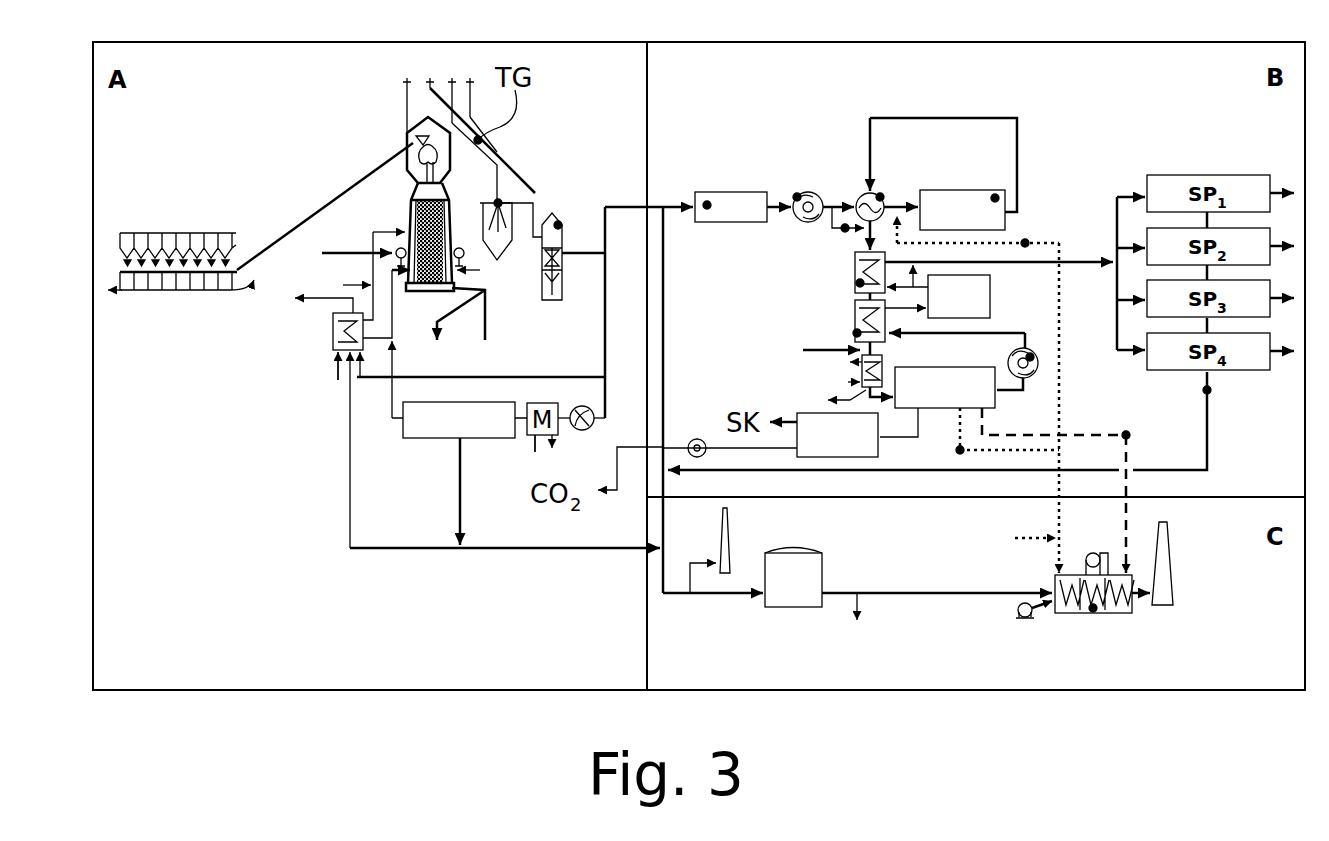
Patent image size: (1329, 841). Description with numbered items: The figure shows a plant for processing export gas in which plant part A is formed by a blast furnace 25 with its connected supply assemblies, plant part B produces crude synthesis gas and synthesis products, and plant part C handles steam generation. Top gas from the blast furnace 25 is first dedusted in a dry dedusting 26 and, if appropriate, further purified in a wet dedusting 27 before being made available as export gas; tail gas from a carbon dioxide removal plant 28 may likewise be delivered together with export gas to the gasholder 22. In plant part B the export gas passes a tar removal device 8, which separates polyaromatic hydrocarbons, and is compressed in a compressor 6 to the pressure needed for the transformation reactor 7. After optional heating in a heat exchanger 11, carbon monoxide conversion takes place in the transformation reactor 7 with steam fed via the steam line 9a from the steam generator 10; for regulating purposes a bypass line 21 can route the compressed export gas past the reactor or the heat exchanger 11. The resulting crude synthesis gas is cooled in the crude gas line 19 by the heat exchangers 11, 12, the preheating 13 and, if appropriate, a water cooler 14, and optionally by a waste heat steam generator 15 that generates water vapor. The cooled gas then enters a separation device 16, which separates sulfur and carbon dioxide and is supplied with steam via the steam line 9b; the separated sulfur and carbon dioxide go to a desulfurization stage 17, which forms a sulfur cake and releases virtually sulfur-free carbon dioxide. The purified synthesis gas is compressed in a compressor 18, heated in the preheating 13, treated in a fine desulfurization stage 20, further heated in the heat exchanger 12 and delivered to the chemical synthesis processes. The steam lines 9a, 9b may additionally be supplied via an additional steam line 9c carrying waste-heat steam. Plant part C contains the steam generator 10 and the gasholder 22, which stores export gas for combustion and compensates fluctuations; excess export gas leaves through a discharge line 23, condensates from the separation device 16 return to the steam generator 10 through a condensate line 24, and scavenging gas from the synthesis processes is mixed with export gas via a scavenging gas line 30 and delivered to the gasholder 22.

The compressor 6 is at (797, 197).
The transformation reactor 7 is at (995, 198).
The tar removal device 8 is at (707, 205).
The steam line 9a is at (1025, 243).
The steam line 9b is at (960, 450).
The additional steam line 9c is at (1018, 408).
The steam generator 10 is at (1093, 608).
The heat exchanger 11 is at (880, 197).
The heat exchanger 12 is at (860, 283).
The preheating 13 is at (857, 333).
The water cooler 14 is at (824, 377).
The waste heat steam generator 15 is at (858, 350).
The separation device 16 is at (937, 402).
The desulfurization stage 17 is at (770, 435).
The compressor 18 is at (1030, 357).
The crude gas line 19 is at (858, 298).
The fine desulfurization stage 20 is at (937, 291).
The bypass line 21 is at (845, 228).
The gasholder 22 is at (742, 557).
The discharge line 23 is at (855, 629).
The condensate line 24 is at (1126, 435).
The blast furnace 25 is at (400, 205).
The dry dedusting 26 is at (498, 203).
The wet dedusting 27 is at (558, 225).
The CO2 removal plant 28 is at (459, 473).
The scavenging gas line 30 is at (1207, 390).